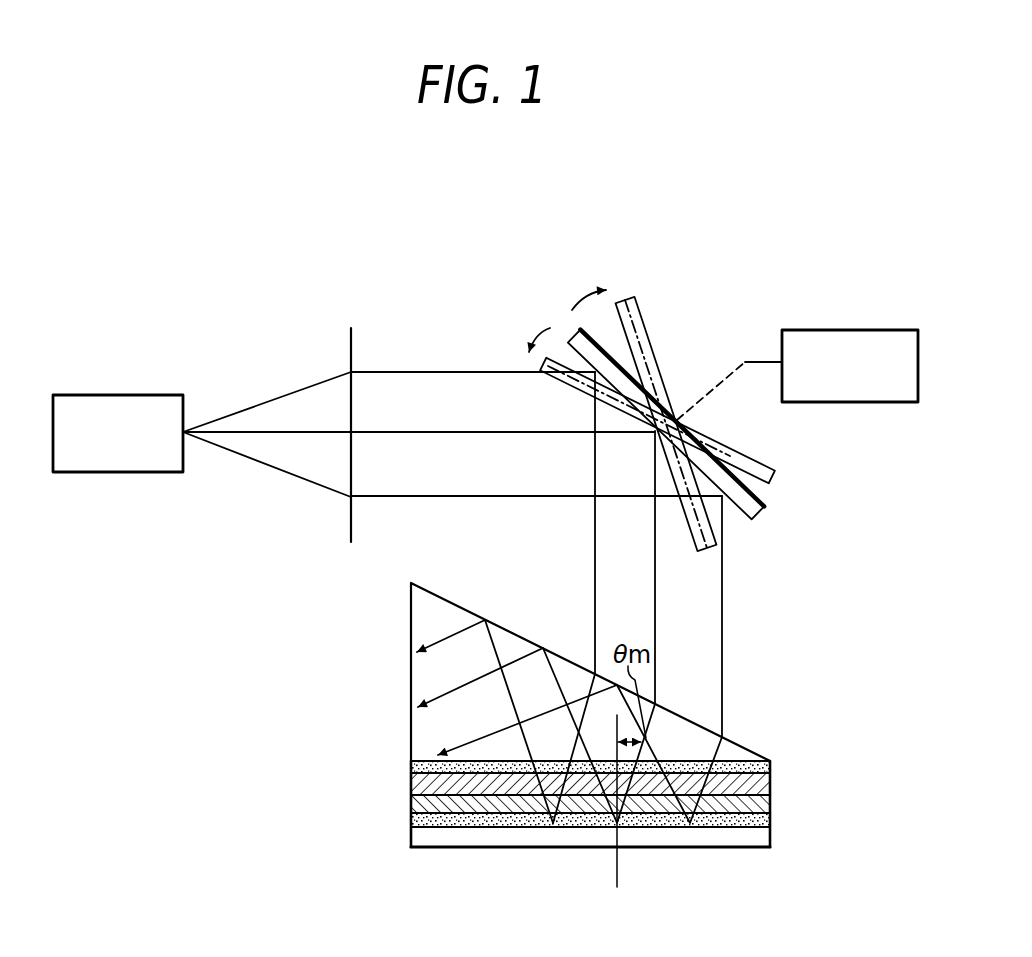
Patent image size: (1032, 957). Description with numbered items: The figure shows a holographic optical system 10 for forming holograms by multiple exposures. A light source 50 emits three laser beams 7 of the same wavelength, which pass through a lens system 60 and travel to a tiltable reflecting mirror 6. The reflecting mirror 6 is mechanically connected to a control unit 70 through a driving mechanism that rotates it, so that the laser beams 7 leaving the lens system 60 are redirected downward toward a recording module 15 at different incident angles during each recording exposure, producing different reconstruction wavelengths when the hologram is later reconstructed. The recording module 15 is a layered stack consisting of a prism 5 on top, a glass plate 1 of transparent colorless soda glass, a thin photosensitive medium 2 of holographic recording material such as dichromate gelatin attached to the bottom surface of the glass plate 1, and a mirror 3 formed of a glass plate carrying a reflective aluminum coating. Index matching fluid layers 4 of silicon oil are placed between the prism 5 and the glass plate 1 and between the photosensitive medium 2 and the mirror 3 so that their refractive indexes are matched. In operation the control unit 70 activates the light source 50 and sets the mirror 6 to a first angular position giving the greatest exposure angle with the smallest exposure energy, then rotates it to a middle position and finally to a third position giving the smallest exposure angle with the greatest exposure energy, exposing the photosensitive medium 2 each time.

The holographic optical system 10 is at (429, 238).
The light source 50 is at (157, 395).
The lens system 60 is at (352, 345).
The laser beams 7 is at (446, 372).
The tiltable reflecting mirror 6 is at (645, 325).
The control unit 70 is at (887, 330).
The recording module 15 is at (375, 690).
The prism 5 is at (738, 750).
The glass plate 1 is at (770, 783).
The photosensitive medium 2 is at (770, 805).
The mirror 3 is at (455, 834).
The index matching fluid layers 4 is at (411, 768).